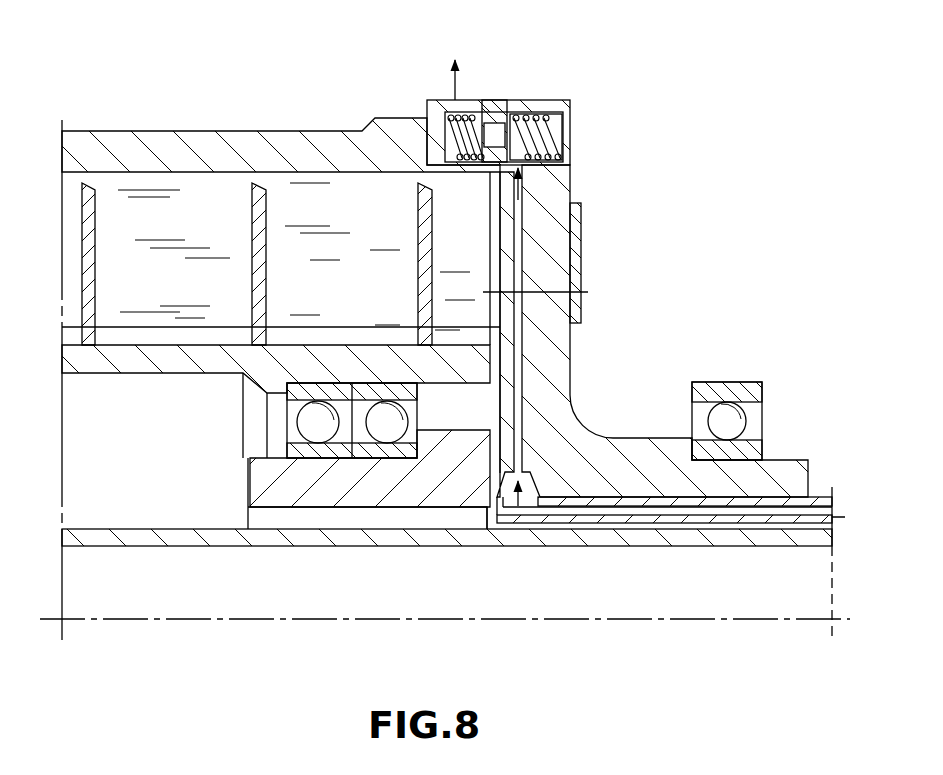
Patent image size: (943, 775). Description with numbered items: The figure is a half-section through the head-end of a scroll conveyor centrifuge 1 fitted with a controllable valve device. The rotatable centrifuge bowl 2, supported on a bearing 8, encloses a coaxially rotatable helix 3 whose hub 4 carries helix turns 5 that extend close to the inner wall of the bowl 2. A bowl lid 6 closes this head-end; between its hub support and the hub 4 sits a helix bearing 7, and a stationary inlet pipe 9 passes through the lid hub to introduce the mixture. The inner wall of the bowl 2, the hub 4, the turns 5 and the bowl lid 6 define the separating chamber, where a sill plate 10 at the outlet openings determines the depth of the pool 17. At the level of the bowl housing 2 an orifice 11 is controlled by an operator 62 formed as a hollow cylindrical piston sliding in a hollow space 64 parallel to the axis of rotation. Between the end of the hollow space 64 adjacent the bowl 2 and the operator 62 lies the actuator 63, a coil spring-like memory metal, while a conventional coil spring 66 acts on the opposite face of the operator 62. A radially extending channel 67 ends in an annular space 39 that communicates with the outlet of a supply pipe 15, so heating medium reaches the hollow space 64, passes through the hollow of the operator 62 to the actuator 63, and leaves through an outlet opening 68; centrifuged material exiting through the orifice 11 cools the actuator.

The scroll conveyor centrifuge 1 is at (696, 274).
The centrifuge bowl 2 is at (262, 152).
The helix 3 is at (80, 225).
The hub 4 is at (85, 357).
The helix turns 5 is at (85, 280).
The bowl lid 6 is at (262, 490).
The helix bearing 7 is at (306, 423).
The bearing 8 is at (740, 418).
The inlet pipe 9 is at (797, 537).
The sill plate 10 is at (576, 252).
The orifice 11 is at (492, 108).
The supply pipe 15 is at (803, 513).
The pool 17 is at (185, 232).
The annular space 39 is at (503, 493).
The operator 62 is at (500, 117).
The actuator 63 is at (466, 110).
The hollow space 64 is at (555, 135).
The coil spring 66 is at (535, 112).
The channel 67 is at (521, 197).
The outlet opening 68 is at (450, 98).